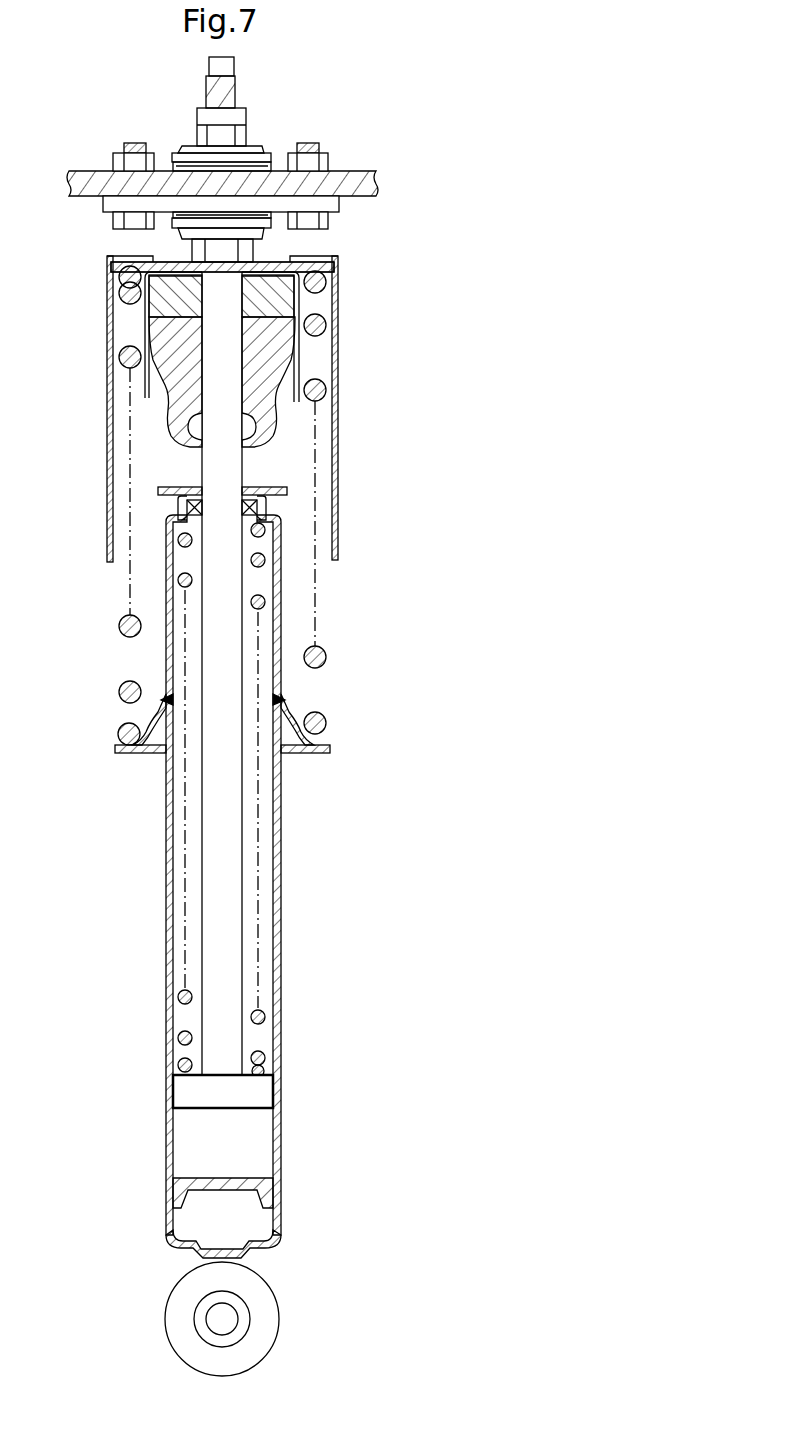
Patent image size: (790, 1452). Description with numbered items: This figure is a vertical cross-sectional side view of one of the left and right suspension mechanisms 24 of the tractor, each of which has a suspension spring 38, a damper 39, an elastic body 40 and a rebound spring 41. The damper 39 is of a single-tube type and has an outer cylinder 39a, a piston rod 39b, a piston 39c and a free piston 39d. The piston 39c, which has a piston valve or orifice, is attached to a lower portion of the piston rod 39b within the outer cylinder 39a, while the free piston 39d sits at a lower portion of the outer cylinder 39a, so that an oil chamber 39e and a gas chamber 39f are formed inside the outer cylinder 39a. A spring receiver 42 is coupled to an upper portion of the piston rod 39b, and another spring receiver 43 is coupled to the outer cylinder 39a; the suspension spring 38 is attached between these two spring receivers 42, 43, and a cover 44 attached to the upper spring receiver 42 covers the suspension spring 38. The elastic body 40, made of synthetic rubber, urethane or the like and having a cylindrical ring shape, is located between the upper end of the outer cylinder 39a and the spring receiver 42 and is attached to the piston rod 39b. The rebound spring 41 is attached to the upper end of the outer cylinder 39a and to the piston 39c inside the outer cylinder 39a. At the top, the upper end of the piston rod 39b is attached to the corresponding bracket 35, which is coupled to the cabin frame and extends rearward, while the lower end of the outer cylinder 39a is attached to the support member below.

The suspension mechanism 24 is at (433, 690).
The bracket 35 is at (355, 172).
The suspension spring 38 is at (119, 626).
The damper 39 is at (281, 828).
The outer cylinder 39a is at (166, 910).
The piston rod 39b is at (232, 915).
The piston 39c is at (250, 1092).
The free piston 39d is at (200, 1178).
The oil chamber 39e is at (257, 1040).
The gas chamber 39f is at (227, 1218).
The elastic body 40 is at (172, 421).
The rebound spring 41 is at (182, 996).
The spring receiver 42 is at (273, 260).
The spring receiver 43 is at (133, 755).
The cover 44 is at (338, 443).